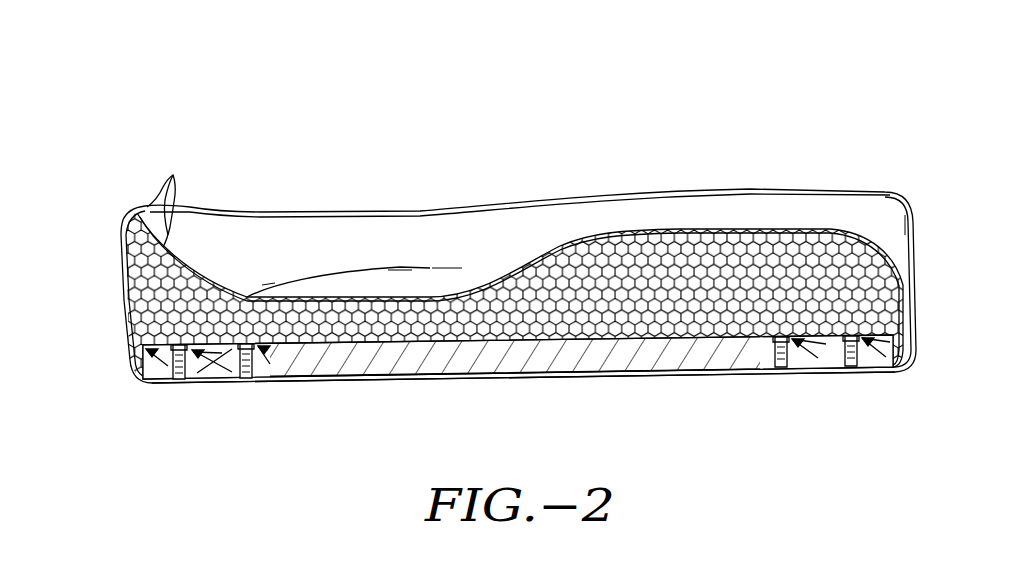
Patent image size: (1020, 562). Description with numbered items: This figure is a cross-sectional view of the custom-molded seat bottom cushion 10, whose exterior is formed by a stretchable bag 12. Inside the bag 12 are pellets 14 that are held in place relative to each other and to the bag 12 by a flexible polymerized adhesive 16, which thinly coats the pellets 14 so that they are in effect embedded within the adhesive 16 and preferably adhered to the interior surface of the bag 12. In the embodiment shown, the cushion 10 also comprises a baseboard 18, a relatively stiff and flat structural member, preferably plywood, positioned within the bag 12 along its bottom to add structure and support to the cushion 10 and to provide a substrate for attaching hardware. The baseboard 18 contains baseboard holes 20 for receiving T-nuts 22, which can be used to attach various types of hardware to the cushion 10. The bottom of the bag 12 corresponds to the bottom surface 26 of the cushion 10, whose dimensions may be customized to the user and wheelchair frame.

The custom-molded seat bottom cushion 10 is at (733, 160).
The stretchable bag 12 is at (122, 274).
The pellets 14 is at (175, 205).
The flexible polymerized adhesive 16 is at (128, 340).
The baseboard 18 is at (357, 369).
The baseboard holes 20 is at (172, 369).
The T-nuts 22 is at (181, 381).
The bottom surface 26 is at (607, 378).